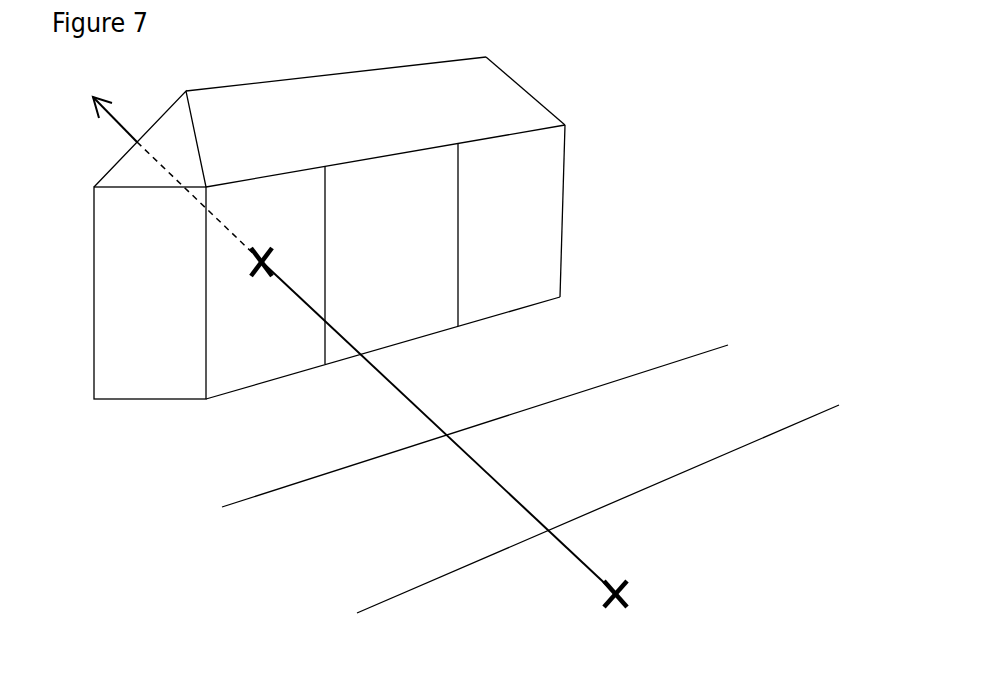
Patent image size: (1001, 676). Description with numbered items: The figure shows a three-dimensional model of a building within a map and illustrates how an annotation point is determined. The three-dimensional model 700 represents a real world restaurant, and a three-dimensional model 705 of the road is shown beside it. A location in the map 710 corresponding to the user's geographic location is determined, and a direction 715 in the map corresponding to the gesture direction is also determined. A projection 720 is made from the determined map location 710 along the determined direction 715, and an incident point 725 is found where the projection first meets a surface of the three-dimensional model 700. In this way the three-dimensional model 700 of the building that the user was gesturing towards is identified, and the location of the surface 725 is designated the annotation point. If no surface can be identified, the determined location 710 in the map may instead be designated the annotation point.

The three-dimensional model of the building 700 is at (110, 278).
The three-dimensional model of the road 705 is at (282, 541).
The location in the map 710 is at (627, 580).
The direction in the map 715 is at (113, 123).
The projection 720 is at (415, 405).
The incident point 725 is at (270, 248).